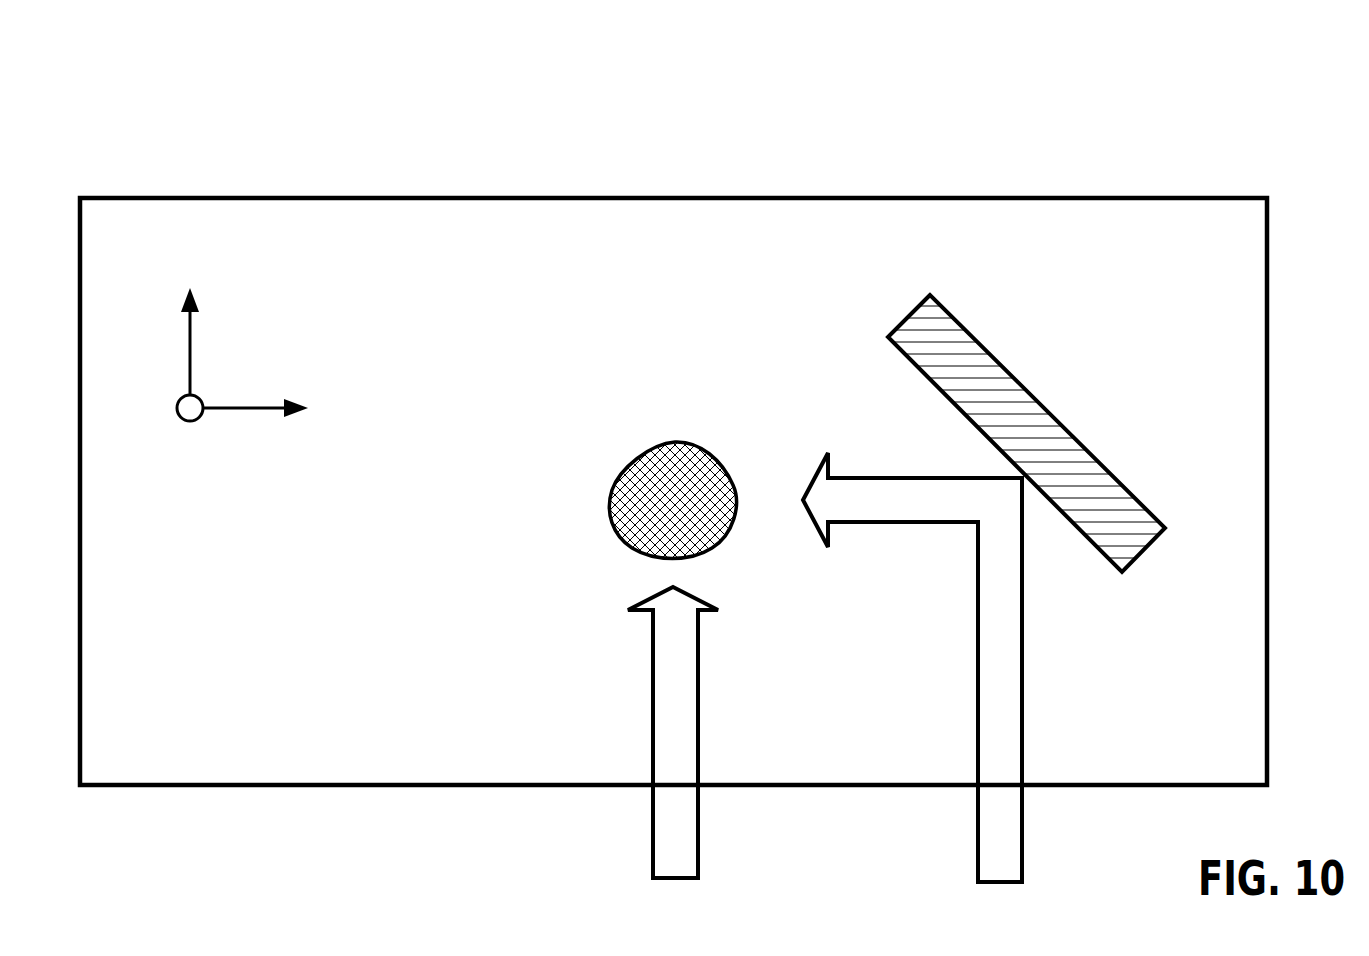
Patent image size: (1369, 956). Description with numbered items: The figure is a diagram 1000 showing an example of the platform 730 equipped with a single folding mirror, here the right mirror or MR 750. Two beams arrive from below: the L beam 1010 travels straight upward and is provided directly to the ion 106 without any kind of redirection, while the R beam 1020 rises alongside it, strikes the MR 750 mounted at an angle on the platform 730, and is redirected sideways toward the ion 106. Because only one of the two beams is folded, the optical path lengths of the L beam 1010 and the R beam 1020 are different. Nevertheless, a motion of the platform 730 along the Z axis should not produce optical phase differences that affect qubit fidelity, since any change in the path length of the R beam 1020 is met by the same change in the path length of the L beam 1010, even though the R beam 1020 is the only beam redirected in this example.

The diagram 1000 is at (199, 101).
The platform 730 is at (880, 198).
The ion 106 is at (722, 428).
The right mirror 750 is at (1063, 418).
The L beam 1010 is at (698, 713).
The R beam 1020 is at (978, 638).